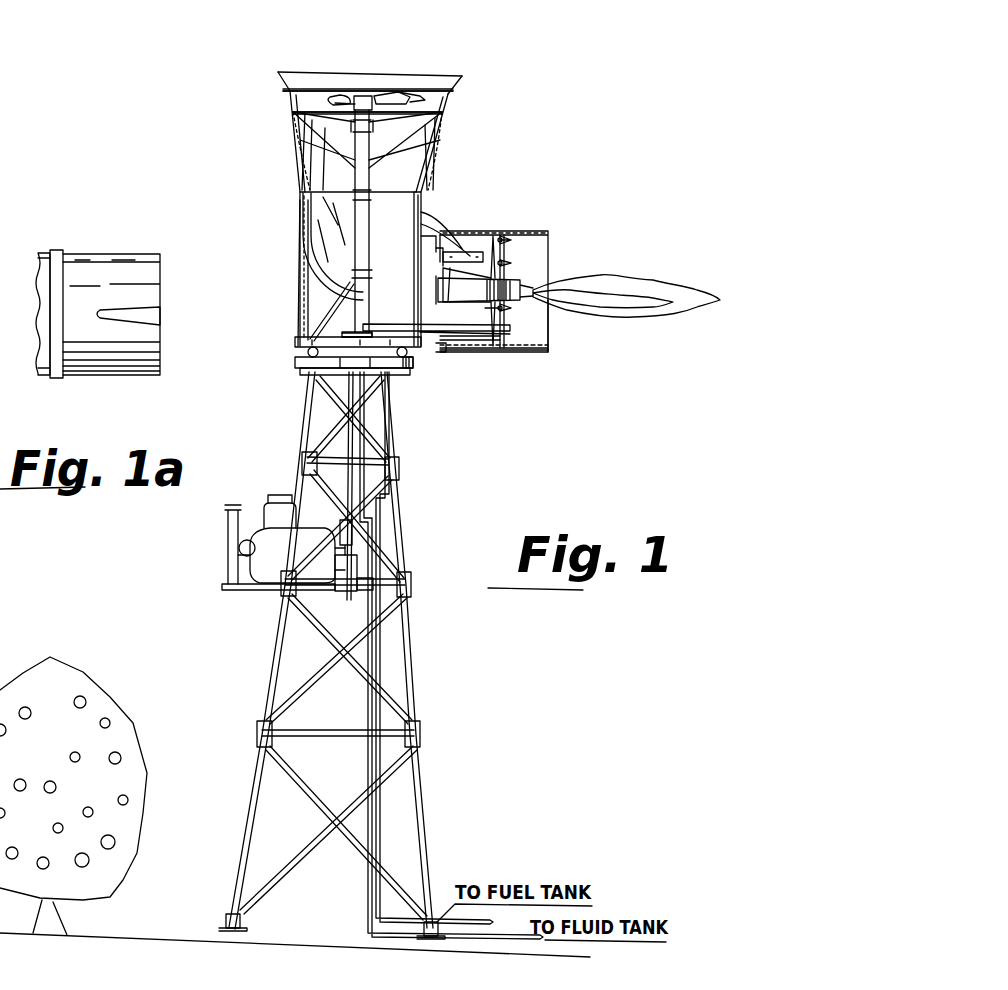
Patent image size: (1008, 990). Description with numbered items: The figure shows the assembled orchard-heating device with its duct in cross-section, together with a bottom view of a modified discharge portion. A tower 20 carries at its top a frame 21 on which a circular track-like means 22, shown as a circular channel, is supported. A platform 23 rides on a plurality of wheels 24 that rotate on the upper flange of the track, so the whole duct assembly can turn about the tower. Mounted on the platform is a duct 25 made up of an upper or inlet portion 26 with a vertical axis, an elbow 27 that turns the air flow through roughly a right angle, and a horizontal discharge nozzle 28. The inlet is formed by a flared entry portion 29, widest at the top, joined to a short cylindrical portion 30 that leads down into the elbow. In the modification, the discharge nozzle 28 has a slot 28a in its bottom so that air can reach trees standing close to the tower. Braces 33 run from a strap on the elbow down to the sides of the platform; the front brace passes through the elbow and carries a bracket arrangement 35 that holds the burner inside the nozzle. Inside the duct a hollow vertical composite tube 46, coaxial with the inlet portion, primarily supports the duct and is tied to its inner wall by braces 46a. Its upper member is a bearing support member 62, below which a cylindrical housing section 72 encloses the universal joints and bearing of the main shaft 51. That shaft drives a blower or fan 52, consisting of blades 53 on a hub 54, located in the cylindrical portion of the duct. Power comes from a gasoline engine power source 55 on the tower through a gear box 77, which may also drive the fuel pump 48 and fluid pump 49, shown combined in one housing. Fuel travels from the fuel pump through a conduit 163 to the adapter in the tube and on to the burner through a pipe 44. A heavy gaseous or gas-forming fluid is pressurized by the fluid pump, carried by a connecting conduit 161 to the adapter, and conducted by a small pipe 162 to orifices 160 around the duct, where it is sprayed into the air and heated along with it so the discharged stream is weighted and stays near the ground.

In FIG. 1, the tower 20 is at (261, 714).
In FIG. 1, the frame 21 is at (322, 384).
In FIG. 1, the circular track-like means 22 is at (412, 368).
In FIG. 1, the platform 23 is at (305, 340).
In FIG. 1, the wheels 24 is at (303, 350).
In FIG. 1, the duct 25 is at (280, 146).
In FIG. 1, the upper or inlet portion 26 is at (409, 62).
In FIG. 1, the elbow 27 is at (430, 226).
In FIG. 1a, the discharge nozzle 28 is at (85, 254).
In FIG. 1, the discharge nozzle 28 is at (500, 233).
In FIG. 1a, the slot 28a is at (110, 312).
In FIG. 1, the flared entry portion 29 is at (283, 78).
In FIG. 1, the cylindrical portion 30 is at (292, 104).
In FIG. 1, the braces 33 is at (300, 240).
In FIG. 1, the bracket arrangement 35 is at (462, 246).
In FIG. 1, the pipe 44 is at (420, 328).
In FIG. 1, the hollow vertical composite tube 46 is at (340, 300).
In FIG. 1, the braces 46a is at (432, 175).
In FIG. 1, the fuel pump 48 is at (373, 582).
In FIG. 1, the fluid pump 49 is at (398, 575).
In FIG. 1, the main shaft 51 is at (357, 449).
In FIG. 1, the blower or fan 52 is at (327, 87).
In FIG. 1, the blades 53 is at (405, 98).
In FIG. 1, the hub 54 is at (366, 94).
In FIG. 1, the power source 55 is at (250, 513).
In FIG. 1, the bearing support member 62 is at (353, 158).
In FIG. 1, the cylindrical housing section 72 is at (350, 256).
In FIG. 1, the gear box 77 is at (340, 580).
In FIG. 1, the orifices 160 is at (503, 263).
In FIG. 1, the connecting conduit 161 is at (392, 513).
In FIG. 1, the small pipe 162 is at (473, 347).
In FIG. 1, the conduit 163 is at (378, 537).